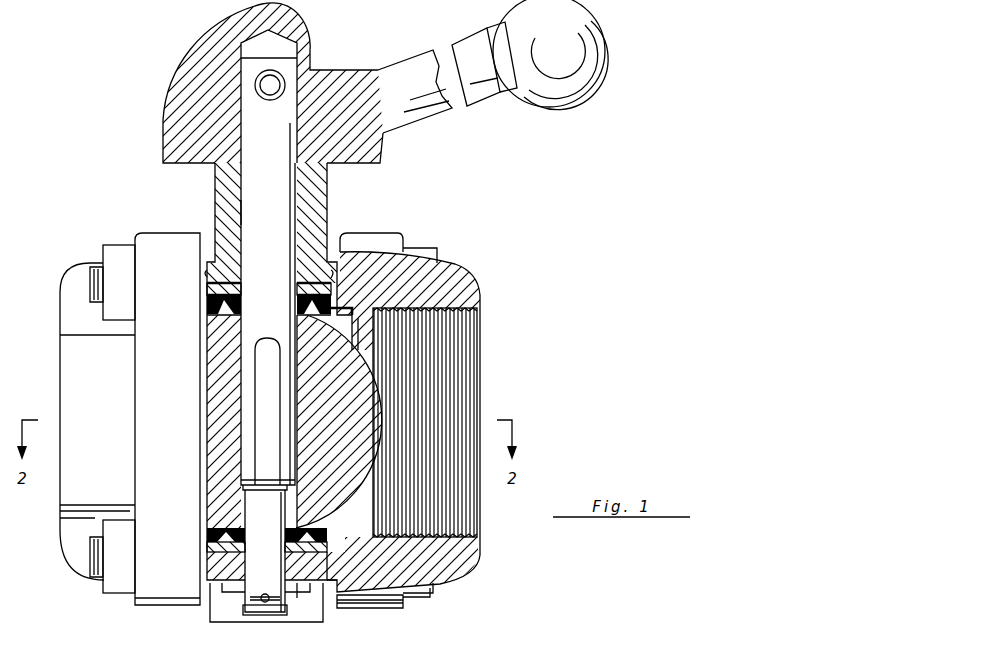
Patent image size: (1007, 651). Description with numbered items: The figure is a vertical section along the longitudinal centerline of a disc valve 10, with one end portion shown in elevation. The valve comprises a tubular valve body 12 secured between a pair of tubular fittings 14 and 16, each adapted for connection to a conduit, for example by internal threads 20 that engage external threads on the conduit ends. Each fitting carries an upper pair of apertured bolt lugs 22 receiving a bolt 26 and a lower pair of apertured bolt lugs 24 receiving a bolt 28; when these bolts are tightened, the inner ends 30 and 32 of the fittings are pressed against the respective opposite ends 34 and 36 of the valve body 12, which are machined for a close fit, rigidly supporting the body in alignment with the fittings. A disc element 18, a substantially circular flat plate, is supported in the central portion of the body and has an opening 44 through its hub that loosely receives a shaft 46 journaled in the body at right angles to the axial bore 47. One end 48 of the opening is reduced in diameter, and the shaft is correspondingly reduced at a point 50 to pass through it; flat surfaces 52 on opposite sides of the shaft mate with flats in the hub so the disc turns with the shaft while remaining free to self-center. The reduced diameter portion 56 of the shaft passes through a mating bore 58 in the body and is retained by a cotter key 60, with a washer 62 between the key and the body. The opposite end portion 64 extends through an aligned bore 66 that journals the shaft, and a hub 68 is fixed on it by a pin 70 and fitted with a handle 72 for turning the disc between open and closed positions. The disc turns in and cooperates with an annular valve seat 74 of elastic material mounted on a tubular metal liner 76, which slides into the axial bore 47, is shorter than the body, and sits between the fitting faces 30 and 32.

The disc valve 10 is at (80, 417).
The tubular valve body 12 is at (218, 172).
The tubular fitting 14 is at (72, 293).
The tubular fitting 16 is at (470, 287).
The disc element 18 is at (346, 421).
The internal threads 20 is at (465, 338).
The upper bolt lugs 22 is at (144, 240).
The lower bolt lugs 24 is at (145, 603).
The bolt 26 is at (97, 264).
The bolt 28 is at (98, 580).
The inner end of fitting 30 is at (206, 287).
The inner end of fitting 32 is at (333, 288).
The end of valve body 34 is at (206, 268).
The end of valve body 36 is at (340, 276).
The opening 44 is at (238, 438).
The shaft 46 is at (240, 372).
The axial bore 47 is at (333, 575).
The reduced diameter end of disc opening 48 is at (243, 498).
The reduced diameter point of shaft 50 is at (246, 470).
The flat surfaces 52 is at (258, 400).
The reduced diameter portion of shaft 56 is at (276, 567).
The bore 58 is at (304, 598).
The cotter key 60 is at (258, 612).
The washer 62 is at (211, 606).
The end portion of shaft 64 is at (251, 179).
The bore 66 is at (242, 220).
The hub 68 is at (196, 62).
The pin 70 is at (283, 79).
The handle 72 is at (415, 68).
The annular valve seat 74 is at (207, 318).
The metal liner 76 is at (206, 302).